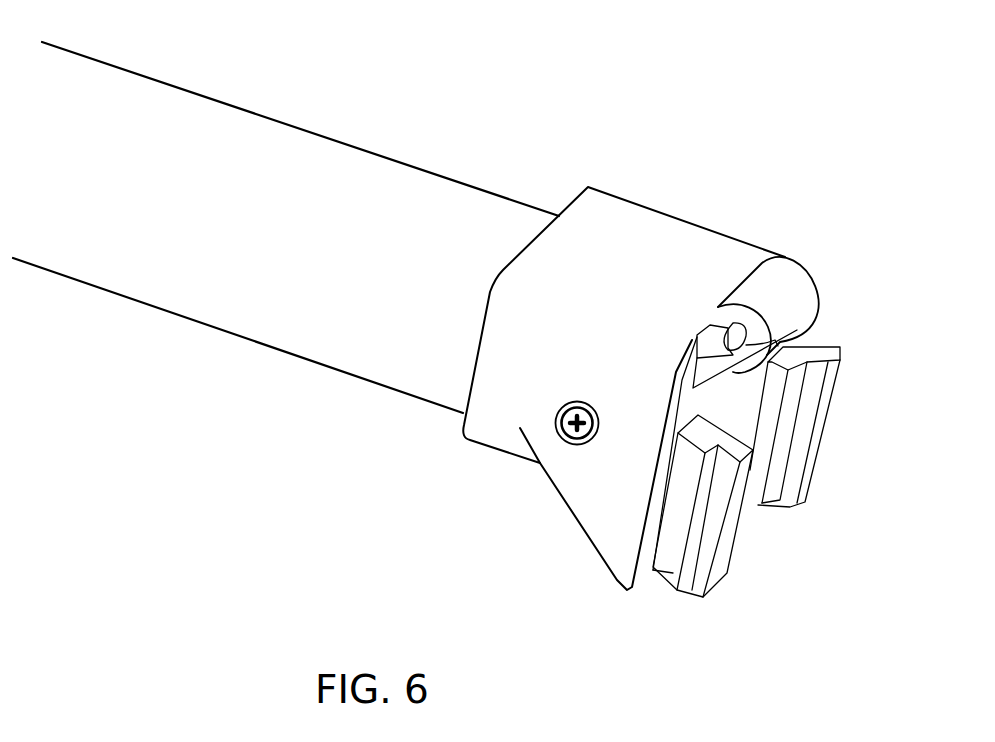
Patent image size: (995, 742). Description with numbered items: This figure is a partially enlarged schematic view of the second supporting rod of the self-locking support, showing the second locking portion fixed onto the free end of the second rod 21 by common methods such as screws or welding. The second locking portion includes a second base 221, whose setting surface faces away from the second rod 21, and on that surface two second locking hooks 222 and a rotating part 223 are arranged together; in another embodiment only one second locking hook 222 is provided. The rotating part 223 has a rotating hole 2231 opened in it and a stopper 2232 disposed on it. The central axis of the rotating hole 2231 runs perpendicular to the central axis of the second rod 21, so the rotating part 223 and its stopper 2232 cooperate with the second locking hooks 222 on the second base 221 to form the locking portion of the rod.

The second rod 21 is at (217, 263).
The second base 221 is at (500, 432).
The second locking hook 222 is at (680, 570).
The rotating part 223 is at (783, 273).
The rotating hole 2231 is at (740, 340).
The stopper 2232 is at (705, 325).